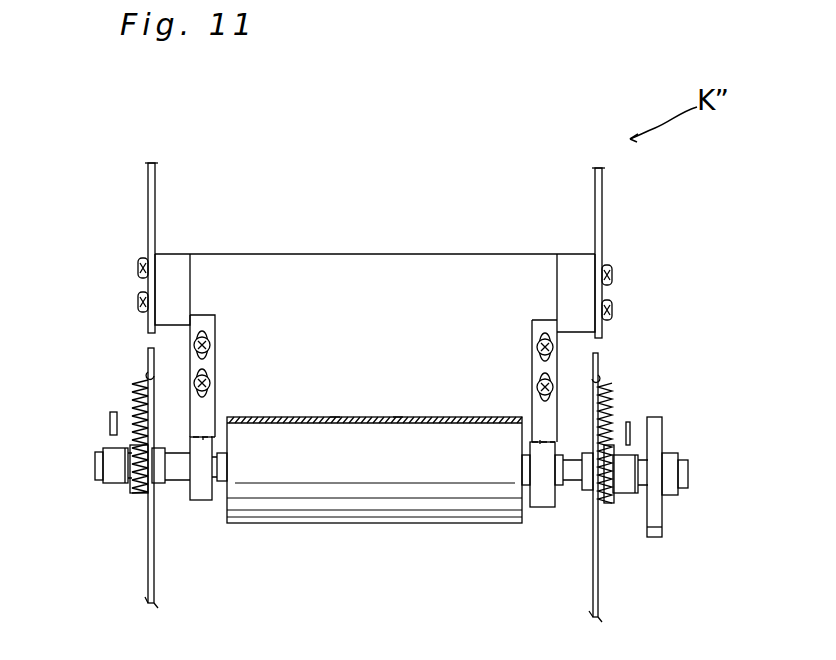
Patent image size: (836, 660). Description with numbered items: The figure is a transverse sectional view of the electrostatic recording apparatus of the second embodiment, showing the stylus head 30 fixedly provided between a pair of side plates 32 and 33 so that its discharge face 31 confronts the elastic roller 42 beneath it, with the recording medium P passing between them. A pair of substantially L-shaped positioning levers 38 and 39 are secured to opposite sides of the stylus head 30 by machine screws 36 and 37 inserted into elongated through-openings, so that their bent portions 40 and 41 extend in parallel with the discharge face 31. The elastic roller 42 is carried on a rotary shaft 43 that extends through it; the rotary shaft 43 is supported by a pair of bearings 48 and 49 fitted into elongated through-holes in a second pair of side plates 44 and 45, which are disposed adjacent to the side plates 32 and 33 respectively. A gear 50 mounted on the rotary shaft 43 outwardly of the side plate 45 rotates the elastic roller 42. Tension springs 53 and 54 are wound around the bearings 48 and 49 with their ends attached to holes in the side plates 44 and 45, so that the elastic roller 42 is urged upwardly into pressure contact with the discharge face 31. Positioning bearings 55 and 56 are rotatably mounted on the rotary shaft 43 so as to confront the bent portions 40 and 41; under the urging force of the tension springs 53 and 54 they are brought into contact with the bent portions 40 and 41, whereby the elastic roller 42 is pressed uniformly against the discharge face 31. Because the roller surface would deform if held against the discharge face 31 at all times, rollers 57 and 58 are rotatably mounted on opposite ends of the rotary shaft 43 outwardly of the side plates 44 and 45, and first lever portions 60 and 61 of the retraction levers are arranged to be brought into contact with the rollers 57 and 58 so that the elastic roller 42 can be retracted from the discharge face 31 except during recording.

The stylus head 30 is at (317, 263).
The discharge face 31 is at (398, 417).
The side plate 32 is at (148, 197).
The side plate 33 is at (602, 190).
The machine screws 36 is at (211, 384).
The machine screws 37 is at (536, 387).
The positioning lever 38 is at (215, 315).
The positioning lever 39 is at (532, 328).
The bent portion 40 is at (203, 437).
The bent portion 41 is at (540, 440).
The elastic roller 42 is at (362, 510).
The rotary shaft 43 is at (223, 470).
The side plate 44 is at (148, 350).
The side plate 45 is at (598, 355).
The bearing 48 is at (160, 483).
The bearing 49 is at (587, 490).
The gear 50 is at (655, 430).
The tension spring 53 is at (140, 385).
The tension spring 54 is at (612, 390).
The positioning bearing 55 is at (202, 500).
The positioning bearing 56 is at (540, 507).
The roller 57 is at (113, 485).
The roller 58 is at (627, 493).
The first lever portion 60 is at (110, 422).
The first lever portion 61 is at (630, 425).
The paper P is at (335, 417).